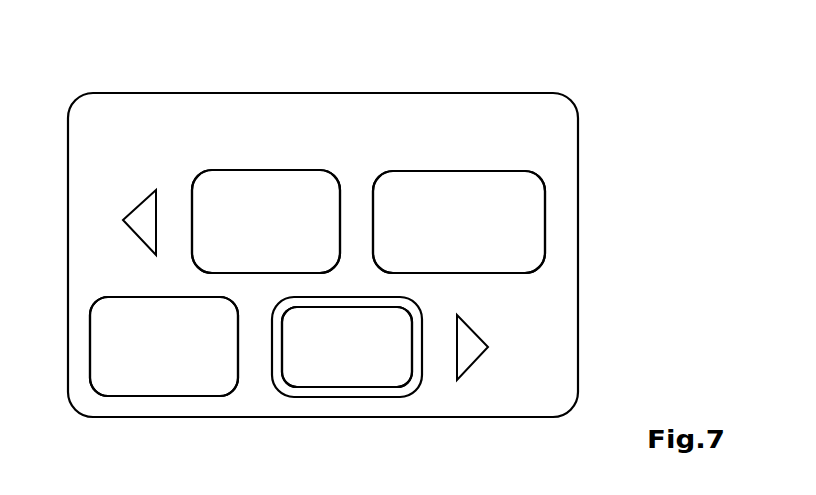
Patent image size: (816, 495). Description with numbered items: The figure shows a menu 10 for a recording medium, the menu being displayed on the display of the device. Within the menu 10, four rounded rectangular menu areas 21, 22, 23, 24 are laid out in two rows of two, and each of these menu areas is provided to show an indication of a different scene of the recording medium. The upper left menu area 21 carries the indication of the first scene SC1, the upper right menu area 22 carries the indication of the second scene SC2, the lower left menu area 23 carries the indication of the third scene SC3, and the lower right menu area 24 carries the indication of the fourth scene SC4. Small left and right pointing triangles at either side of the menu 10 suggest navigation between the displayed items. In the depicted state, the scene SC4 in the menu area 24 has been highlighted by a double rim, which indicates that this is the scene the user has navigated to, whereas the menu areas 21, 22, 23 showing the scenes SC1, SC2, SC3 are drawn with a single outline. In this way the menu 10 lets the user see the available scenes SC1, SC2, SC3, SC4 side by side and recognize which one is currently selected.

The menu 10 is at (579, 219).
The menu area 21 is at (328, 171).
The menu area 22 is at (407, 172).
The menu area 23 is at (203, 397).
The menu area 24 is at (288, 397).
The scene SC1 is at (272, 193).
The scene SC2 is at (482, 187).
The scene SC3 is at (142, 377).
The scene SC4 is at (355, 370).